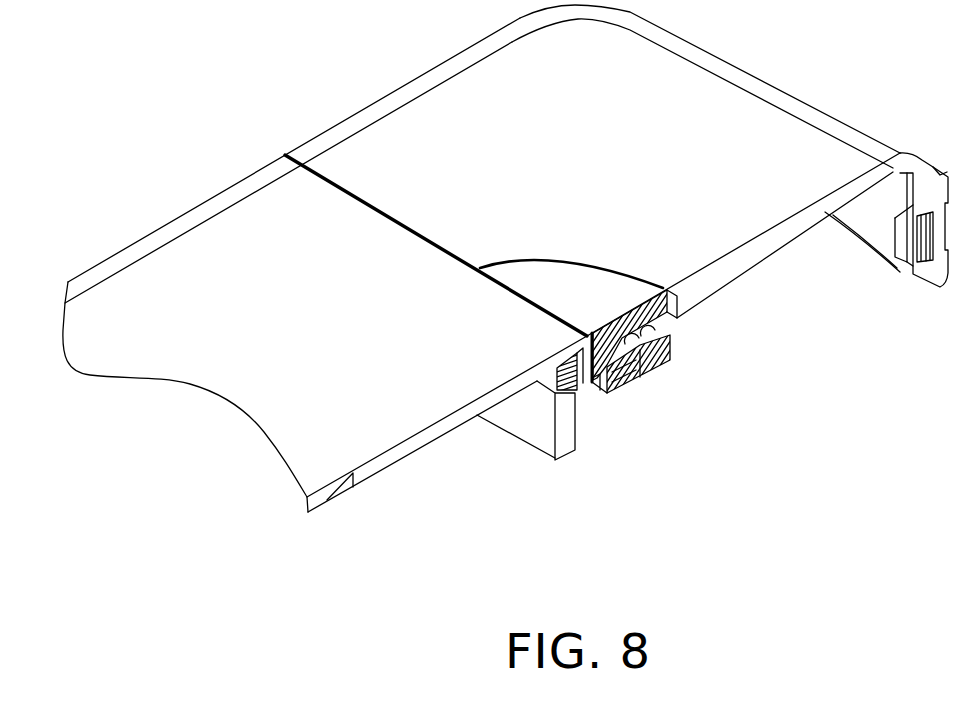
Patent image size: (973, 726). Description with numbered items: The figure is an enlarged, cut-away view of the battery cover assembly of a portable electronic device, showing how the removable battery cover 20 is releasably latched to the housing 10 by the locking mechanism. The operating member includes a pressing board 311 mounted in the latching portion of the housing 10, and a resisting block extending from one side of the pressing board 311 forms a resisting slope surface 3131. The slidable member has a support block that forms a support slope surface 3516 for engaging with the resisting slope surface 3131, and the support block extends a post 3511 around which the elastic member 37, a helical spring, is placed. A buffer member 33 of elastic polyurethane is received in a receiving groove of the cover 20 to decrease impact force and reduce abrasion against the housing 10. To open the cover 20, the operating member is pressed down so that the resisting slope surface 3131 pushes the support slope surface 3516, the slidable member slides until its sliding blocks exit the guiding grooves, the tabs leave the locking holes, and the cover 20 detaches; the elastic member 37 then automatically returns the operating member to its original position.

The housing 10 is at (733, 137).
The removable battery cover 20 is at (203, 285).
The pressing board 311 is at (562, 292).
The buffer member 33 is at (551, 393).
The elastic member 37 is at (673, 318).
The post 3511 is at (655, 355).
The support slope surface 3516 is at (620, 390).
The resisting slope surface 3131 is at (596, 392).